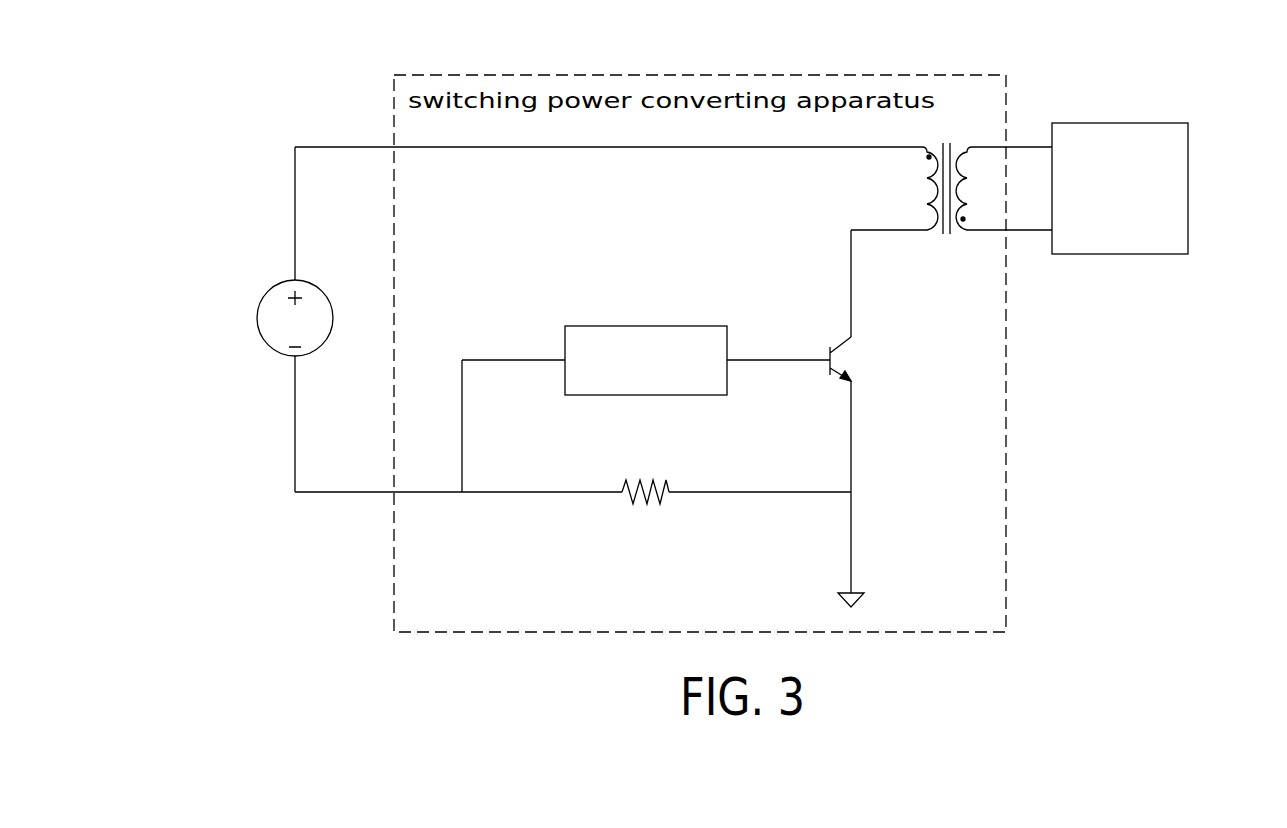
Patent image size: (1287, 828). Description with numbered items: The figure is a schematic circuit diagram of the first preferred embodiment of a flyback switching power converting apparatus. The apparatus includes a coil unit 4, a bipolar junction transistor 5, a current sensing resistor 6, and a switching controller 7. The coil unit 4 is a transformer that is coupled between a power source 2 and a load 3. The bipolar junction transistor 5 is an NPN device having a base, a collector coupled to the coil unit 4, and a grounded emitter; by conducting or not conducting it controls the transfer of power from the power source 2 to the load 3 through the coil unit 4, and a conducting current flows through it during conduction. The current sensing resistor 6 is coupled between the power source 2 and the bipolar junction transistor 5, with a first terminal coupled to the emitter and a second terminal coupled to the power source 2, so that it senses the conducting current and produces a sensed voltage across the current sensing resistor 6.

The power source 2 is at (257, 316).
The load 3 is at (1188, 186).
The coil unit 4 is at (946, 141).
The bipolar junction transistor 5 is at (862, 357).
The current sensing resistor 6 is at (642, 506).
The switching controller 7 is at (647, 325).